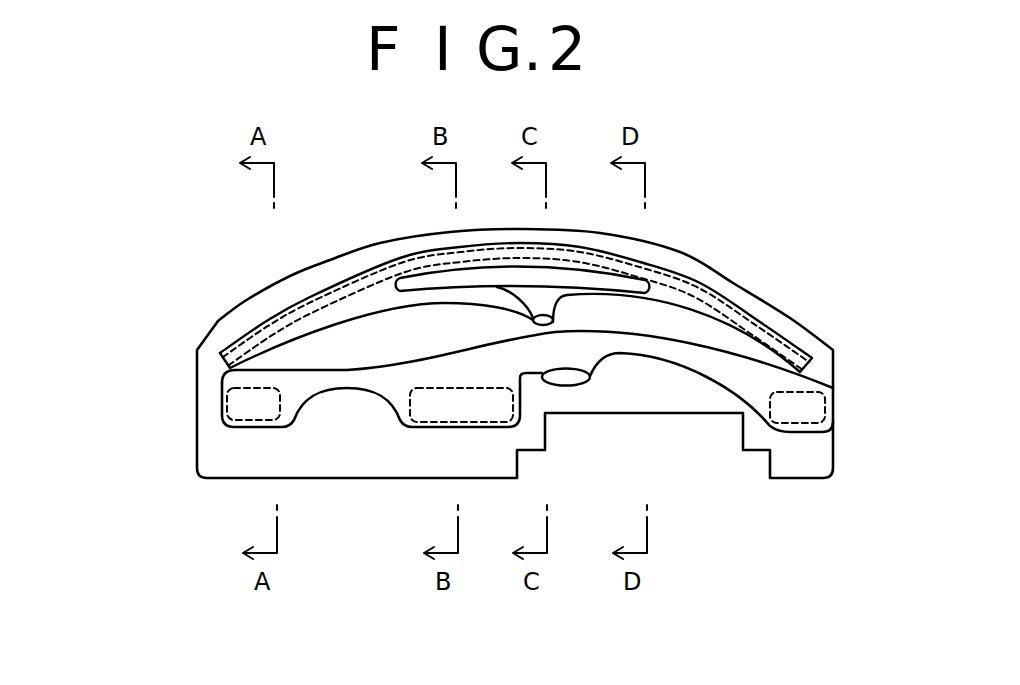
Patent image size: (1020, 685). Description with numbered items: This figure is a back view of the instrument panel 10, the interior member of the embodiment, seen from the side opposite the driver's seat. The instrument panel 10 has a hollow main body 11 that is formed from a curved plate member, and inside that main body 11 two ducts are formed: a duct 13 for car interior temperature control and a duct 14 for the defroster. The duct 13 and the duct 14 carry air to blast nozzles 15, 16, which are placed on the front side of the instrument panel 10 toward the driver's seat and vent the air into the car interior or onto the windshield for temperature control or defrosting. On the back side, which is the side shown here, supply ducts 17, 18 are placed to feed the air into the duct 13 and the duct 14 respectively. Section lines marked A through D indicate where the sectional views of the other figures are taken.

The instrument panel 10 is at (164, 325).
The main body 11 is at (212, 364).
The duct for car interior temperature control 13 is at (695, 372).
The duct for defroster 14 is at (687, 300).
The blast nozzle 15 is at (225, 407).
The blast nozzle 16 is at (268, 285).
The supply duct 17 is at (573, 380).
The supply duct 18 is at (548, 330).